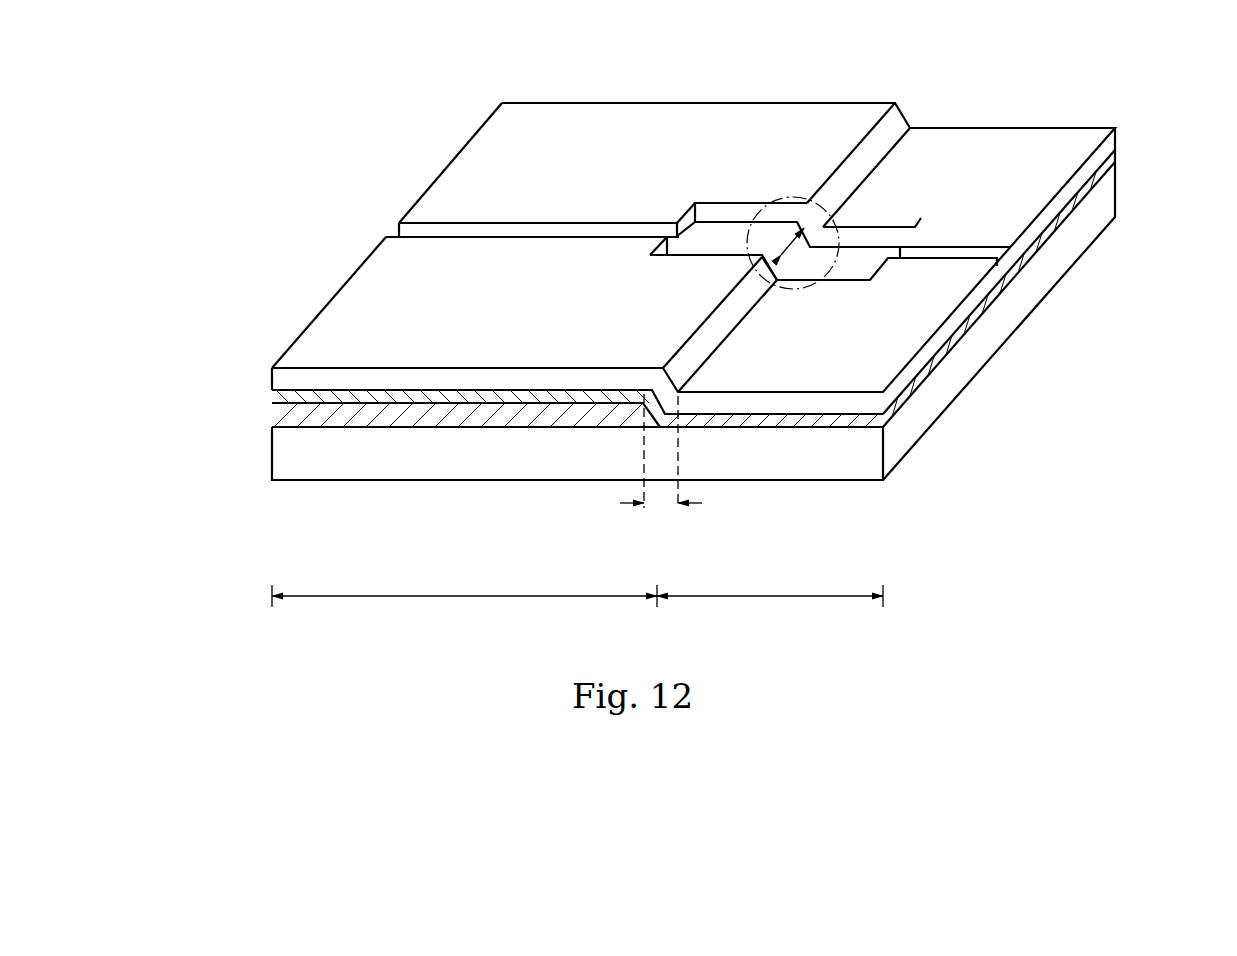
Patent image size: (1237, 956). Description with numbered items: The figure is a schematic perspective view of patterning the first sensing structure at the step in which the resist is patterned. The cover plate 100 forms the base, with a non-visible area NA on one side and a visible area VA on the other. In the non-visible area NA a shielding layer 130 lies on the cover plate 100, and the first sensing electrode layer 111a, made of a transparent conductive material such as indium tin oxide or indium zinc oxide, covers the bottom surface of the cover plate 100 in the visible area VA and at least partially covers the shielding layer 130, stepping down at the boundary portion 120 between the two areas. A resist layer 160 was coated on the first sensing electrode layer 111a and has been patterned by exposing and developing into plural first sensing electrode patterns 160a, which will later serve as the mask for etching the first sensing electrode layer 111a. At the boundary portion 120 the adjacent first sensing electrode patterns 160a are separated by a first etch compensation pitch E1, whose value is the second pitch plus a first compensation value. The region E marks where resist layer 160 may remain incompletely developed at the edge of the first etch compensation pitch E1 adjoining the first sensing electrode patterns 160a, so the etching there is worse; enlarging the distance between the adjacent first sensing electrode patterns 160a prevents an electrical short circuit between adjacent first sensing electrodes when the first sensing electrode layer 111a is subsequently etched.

The cover plate 100 is at (930, 402).
The shielding layer 130 is at (288, 413).
The first sensing electrode layer 111a is at (737, 237).
The resist layer 160 is at (1117, 133).
The first sensing electrode patterns 160a is at (487, 170).
The region E is at (808, 200).
The first etch compensation pitch E1 is at (792, 263).
The boundary portion 120 is at (655, 504).
The non-visible area NA is at (464, 605).
The visible area VA is at (770, 605).